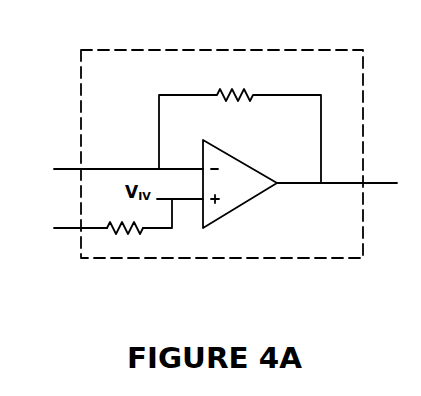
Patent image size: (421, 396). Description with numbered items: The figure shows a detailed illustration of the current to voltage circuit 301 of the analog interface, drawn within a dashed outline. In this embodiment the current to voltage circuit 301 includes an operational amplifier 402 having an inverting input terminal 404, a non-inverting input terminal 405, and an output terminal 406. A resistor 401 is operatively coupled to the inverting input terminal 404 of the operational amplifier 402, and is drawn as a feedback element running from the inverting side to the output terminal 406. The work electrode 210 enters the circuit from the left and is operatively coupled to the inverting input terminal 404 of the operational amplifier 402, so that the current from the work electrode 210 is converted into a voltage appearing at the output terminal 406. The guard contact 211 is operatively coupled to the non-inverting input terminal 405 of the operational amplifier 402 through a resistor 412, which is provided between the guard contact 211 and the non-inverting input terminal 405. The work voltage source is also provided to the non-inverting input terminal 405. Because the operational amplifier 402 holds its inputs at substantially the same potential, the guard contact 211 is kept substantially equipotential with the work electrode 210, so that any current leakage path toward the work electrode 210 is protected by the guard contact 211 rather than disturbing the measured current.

The current to voltage circuit 301 is at (128, 50).
The resistor 401 is at (230, 88).
The operational amplifier 402 is at (247, 204).
The inverting input terminal 404 is at (201, 166).
The non-inverting input terminal 405 is at (203, 200).
The output terminal 406 is at (323, 182).
The work electrode 210 is at (76, 168).
The guard contact 211 is at (66, 229).
The resistor 412 is at (125, 233).